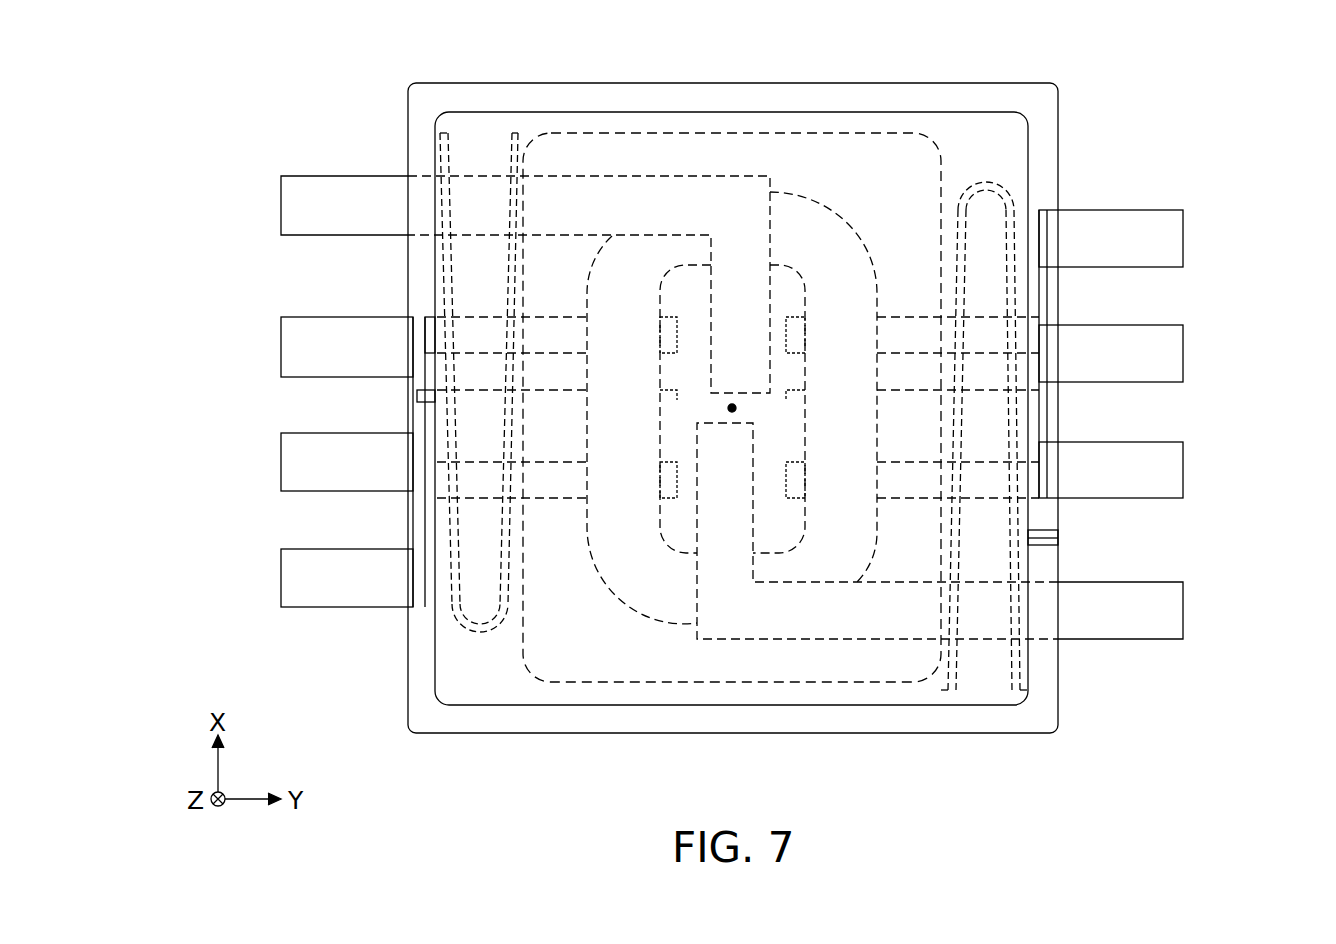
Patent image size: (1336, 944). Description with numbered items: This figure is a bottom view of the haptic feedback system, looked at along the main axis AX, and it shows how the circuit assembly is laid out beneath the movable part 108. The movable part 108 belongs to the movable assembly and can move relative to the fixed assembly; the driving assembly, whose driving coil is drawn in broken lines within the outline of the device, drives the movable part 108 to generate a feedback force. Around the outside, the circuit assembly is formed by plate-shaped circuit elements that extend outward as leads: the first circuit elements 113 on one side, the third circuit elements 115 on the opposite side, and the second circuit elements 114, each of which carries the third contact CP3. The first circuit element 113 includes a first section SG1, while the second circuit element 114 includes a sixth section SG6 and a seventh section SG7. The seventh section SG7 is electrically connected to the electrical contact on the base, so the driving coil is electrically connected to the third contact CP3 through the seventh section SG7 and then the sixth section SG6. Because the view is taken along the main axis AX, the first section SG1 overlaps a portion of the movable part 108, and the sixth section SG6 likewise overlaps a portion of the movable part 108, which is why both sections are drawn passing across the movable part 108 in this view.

The movable part 108 is at (857, 160).
The first circuit element 113 is at (276, 352).
The second circuit element 114 is at (746, 368).
The third circuit element 115 is at (1194, 236).
The third contact CP3 is at (300, 207).
The first section SG1 is at (540, 340).
The sixth section SG6 is at (657, 212).
The seventh section SG7 is at (740, 300).
The main axis AX is at (752, 411).